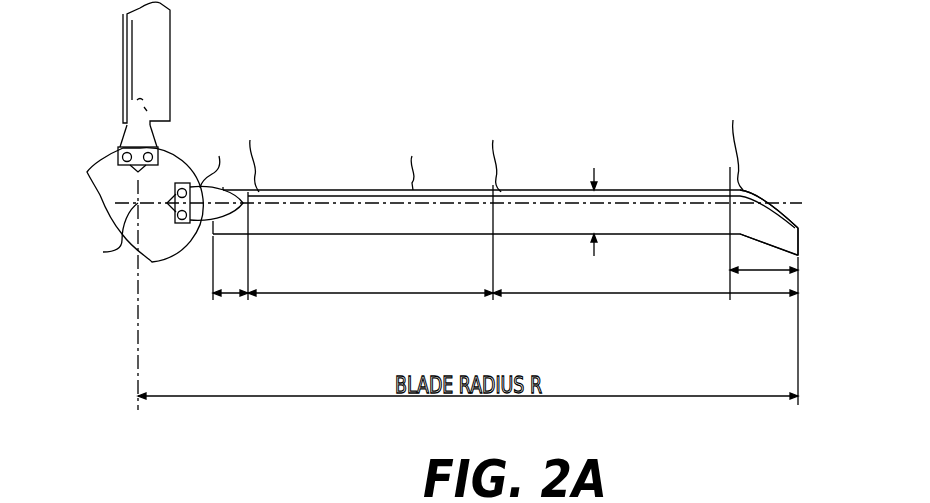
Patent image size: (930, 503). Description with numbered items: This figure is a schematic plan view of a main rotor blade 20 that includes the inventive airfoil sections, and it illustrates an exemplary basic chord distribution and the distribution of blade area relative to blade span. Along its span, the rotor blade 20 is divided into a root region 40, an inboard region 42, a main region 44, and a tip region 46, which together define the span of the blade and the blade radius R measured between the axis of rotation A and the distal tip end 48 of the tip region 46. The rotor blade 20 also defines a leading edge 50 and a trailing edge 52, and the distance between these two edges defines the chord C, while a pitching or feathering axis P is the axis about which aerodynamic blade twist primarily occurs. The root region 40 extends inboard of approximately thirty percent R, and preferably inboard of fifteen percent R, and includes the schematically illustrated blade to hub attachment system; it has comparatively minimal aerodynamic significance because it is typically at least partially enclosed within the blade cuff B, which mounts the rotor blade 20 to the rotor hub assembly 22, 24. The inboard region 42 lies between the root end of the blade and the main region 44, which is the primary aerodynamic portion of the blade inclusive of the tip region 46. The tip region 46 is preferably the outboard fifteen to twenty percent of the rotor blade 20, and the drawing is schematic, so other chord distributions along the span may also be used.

The main rotor blade 20 is at (557, 135).
The rotor hub assembly 22 is at (145, 132).
The rotor hub assembly 24 is at (92, 166).
The root region 40 is at (230, 272).
The inboard region 42 is at (370, 268).
The main region 44 is at (645, 331).
The tip region 46 is at (764, 233).
The distal tip end 48 is at (805, 238).
The leading edge 50 is at (352, 190).
The trailing edge 52 is at (296, 236).